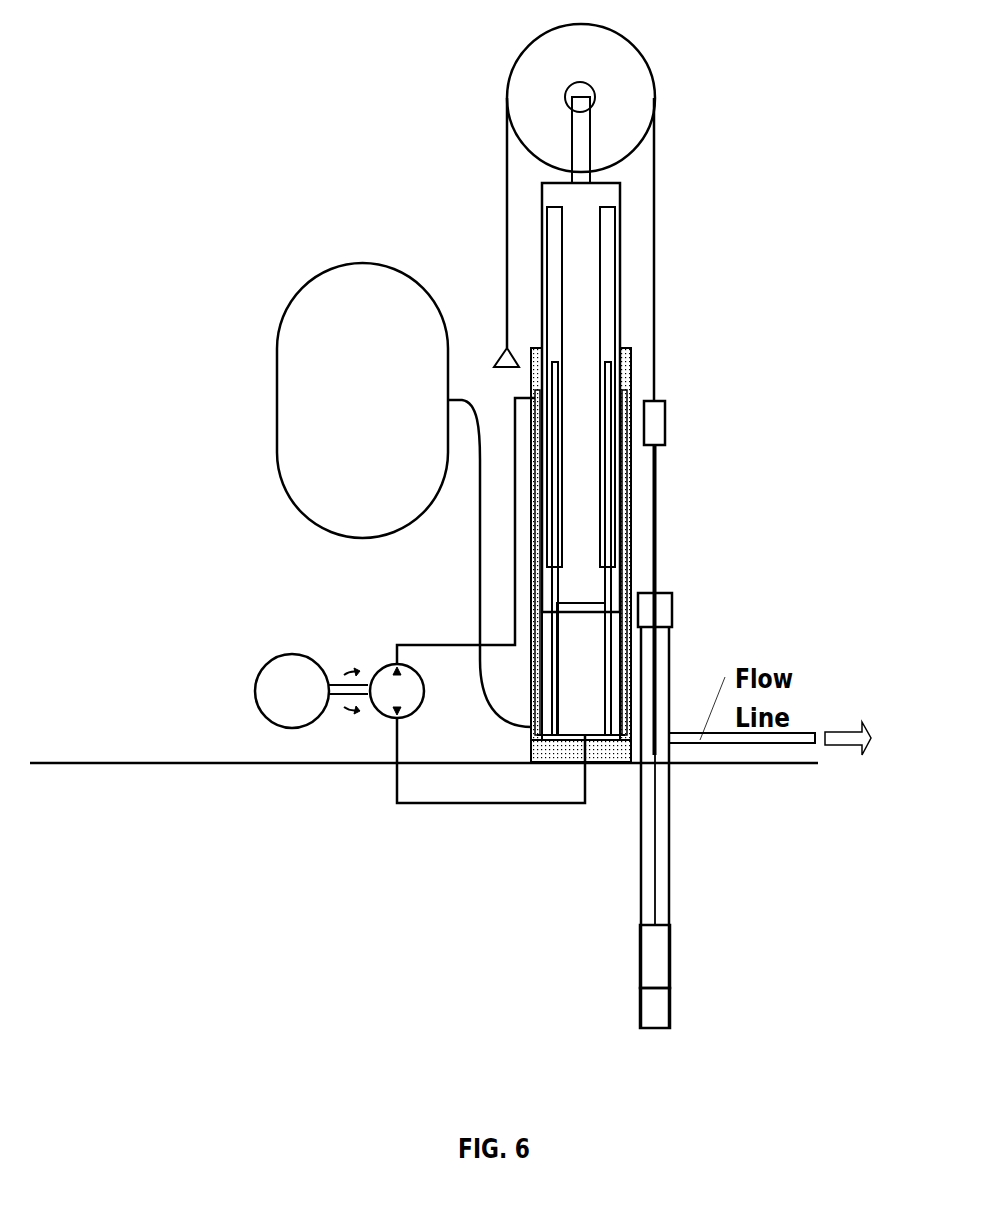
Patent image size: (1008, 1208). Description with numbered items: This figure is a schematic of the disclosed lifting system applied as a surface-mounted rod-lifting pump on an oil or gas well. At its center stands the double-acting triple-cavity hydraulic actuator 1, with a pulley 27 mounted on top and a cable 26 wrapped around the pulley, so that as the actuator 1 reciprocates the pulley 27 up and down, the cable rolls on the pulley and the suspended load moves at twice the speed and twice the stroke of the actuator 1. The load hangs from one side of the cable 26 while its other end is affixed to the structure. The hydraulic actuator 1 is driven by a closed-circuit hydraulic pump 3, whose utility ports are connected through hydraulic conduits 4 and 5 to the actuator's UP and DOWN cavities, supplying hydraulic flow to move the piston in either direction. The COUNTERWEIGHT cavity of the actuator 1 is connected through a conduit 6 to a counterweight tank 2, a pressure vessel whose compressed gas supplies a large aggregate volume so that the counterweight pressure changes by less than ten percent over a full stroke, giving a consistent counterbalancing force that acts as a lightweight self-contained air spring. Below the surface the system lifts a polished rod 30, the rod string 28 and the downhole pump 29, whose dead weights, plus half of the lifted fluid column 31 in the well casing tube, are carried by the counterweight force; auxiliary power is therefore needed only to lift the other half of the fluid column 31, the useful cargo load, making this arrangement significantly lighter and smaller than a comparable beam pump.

The hydraulic actuator 1 is at (633, 365).
The counterweight tank 2 is at (345, 298).
The hydraulic pump 3 is at (372, 677).
The hydraulic conduit 4 is at (427, 643).
The hydraulic conduit 5 is at (442, 805).
The conduit 6 is at (478, 520).
The cable 26 is at (655, 191).
The pulley 27 is at (543, 58).
The rod string 28 is at (657, 850).
The downhole pump 29 is at (652, 972).
The polished rod 30 is at (657, 533).
The fluid column 31 is at (662, 800).